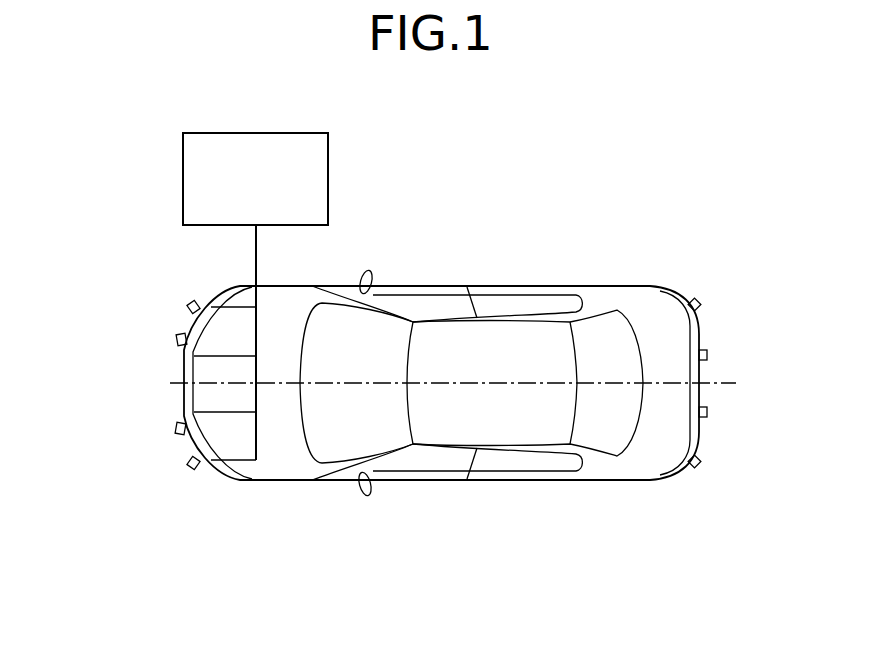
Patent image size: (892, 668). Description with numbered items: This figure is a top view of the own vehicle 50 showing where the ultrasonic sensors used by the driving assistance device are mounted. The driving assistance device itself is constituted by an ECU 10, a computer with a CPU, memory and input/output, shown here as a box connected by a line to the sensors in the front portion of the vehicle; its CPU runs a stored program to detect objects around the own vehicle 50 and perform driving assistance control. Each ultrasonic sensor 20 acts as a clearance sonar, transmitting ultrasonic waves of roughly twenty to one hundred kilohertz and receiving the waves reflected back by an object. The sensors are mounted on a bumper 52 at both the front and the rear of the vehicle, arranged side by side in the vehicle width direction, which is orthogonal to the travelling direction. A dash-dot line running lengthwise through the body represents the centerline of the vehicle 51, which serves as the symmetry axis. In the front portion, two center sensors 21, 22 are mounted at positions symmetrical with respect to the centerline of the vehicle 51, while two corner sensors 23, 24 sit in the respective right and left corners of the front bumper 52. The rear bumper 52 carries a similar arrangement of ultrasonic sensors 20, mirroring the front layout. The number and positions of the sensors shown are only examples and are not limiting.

The ECU 10 is at (288, 133).
The ultrasonic sensor 20 is at (158, 263).
The center sensor 21 is at (177, 338).
The center sensor 22 is at (176, 433).
The corner sensor 23 is at (193, 302).
The corner sensor 24 is at (194, 470).
The own vehicle 50 is at (500, 286).
The centerline of the vehicle 51 is at (471, 384).
The bumper 52 is at (226, 290).